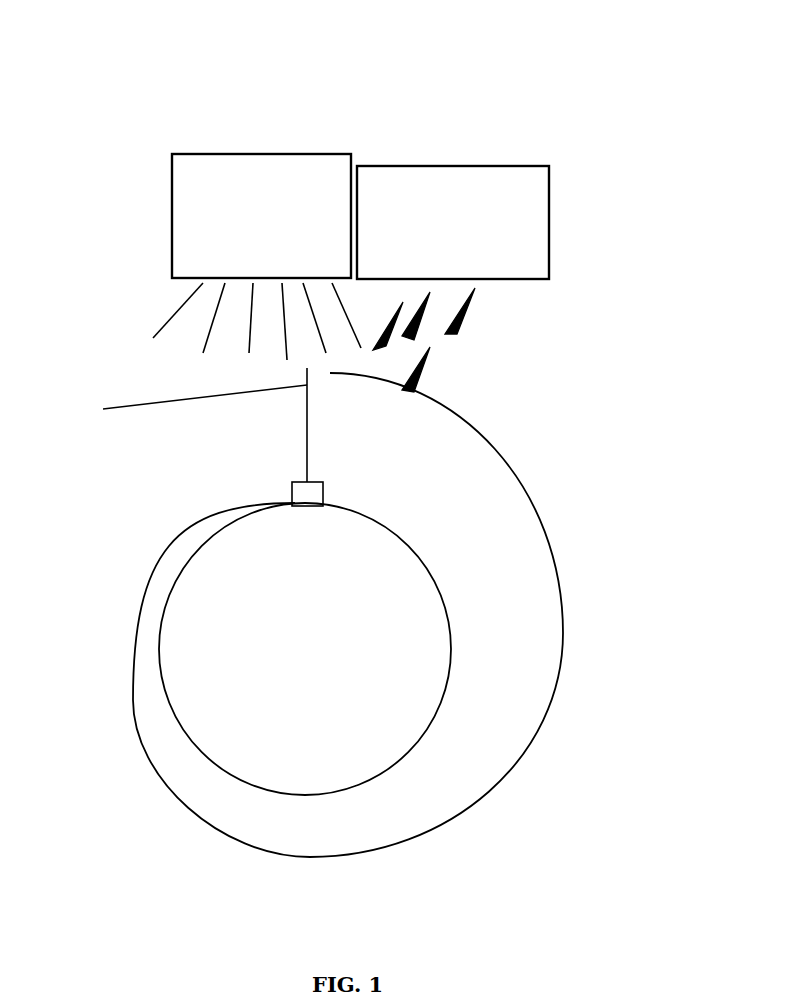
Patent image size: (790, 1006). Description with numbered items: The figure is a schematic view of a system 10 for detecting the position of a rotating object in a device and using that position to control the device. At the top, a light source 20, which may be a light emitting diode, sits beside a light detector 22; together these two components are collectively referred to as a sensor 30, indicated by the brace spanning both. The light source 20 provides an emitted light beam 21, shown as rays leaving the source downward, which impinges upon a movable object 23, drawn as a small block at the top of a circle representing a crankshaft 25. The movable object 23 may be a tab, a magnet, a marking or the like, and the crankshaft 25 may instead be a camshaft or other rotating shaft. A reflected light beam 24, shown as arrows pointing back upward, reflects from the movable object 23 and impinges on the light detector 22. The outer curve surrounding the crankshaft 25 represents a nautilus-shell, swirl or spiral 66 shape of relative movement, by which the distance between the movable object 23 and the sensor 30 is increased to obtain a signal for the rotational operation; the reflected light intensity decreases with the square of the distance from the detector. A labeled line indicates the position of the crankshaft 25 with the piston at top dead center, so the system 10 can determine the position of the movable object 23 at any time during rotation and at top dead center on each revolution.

The system 10 is at (645, 402).
The light source 20 is at (172, 213).
The emitted light beam 21 is at (168, 315).
The light detector 22 is at (551, 237).
The movable object 23 is at (290, 490).
The reflected light beam 24 is at (460, 328).
The crankshaft 25 is at (265, 703).
The sensor 30 is at (553, 131).
The spiral 66 is at (563, 607).